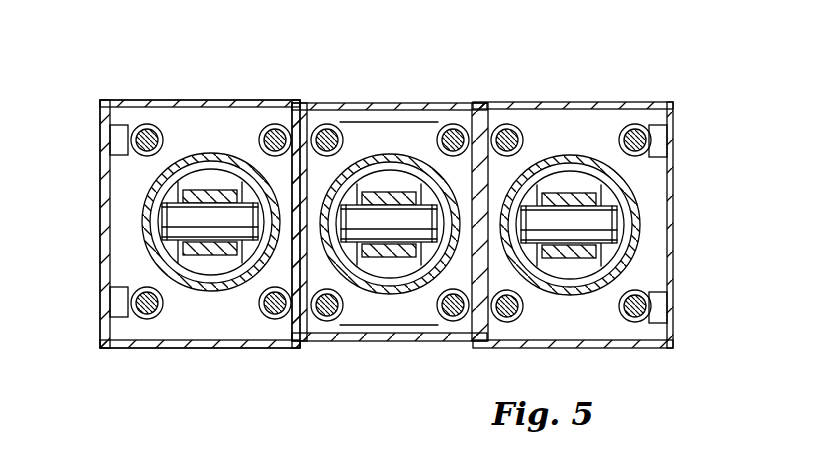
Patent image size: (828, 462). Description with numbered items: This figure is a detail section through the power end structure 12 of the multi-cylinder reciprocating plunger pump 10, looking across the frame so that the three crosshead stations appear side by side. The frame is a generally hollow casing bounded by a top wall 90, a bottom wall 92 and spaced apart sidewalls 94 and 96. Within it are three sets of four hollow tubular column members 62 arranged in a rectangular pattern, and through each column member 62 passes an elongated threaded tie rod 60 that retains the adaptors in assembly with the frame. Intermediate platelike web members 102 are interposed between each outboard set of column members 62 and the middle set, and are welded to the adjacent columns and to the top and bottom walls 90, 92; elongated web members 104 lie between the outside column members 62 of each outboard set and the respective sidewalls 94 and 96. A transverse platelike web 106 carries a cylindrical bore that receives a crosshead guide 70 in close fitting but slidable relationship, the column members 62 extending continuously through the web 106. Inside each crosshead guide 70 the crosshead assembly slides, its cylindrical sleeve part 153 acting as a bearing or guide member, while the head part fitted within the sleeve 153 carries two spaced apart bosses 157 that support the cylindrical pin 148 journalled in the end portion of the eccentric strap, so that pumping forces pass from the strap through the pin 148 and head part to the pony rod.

The multi-cylinder reciprocating plunger pump 10 is at (568, 72).
The power end structure 12 is at (233, 98).
The tie rod 60 is at (154, 116).
The tubular column member 62 is at (262, 137).
The crosshead guide 70 is at (160, 262).
The top wall 90 is at (211, 100).
The bottom wall 92 is at (233, 348).
The sidewall 94 is at (101, 210).
The sidewall 96 is at (672, 208).
The intermediate platelike web member 102 is at (305, 103).
The elongated web member 104 is at (118, 136).
The transverse platelike web 106 is at (417, 82).
The cylindrical pin 148 is at (228, 227).
The cylindrical sleeve part 153 is at (152, 222).
The boss 157 is at (157, 190).